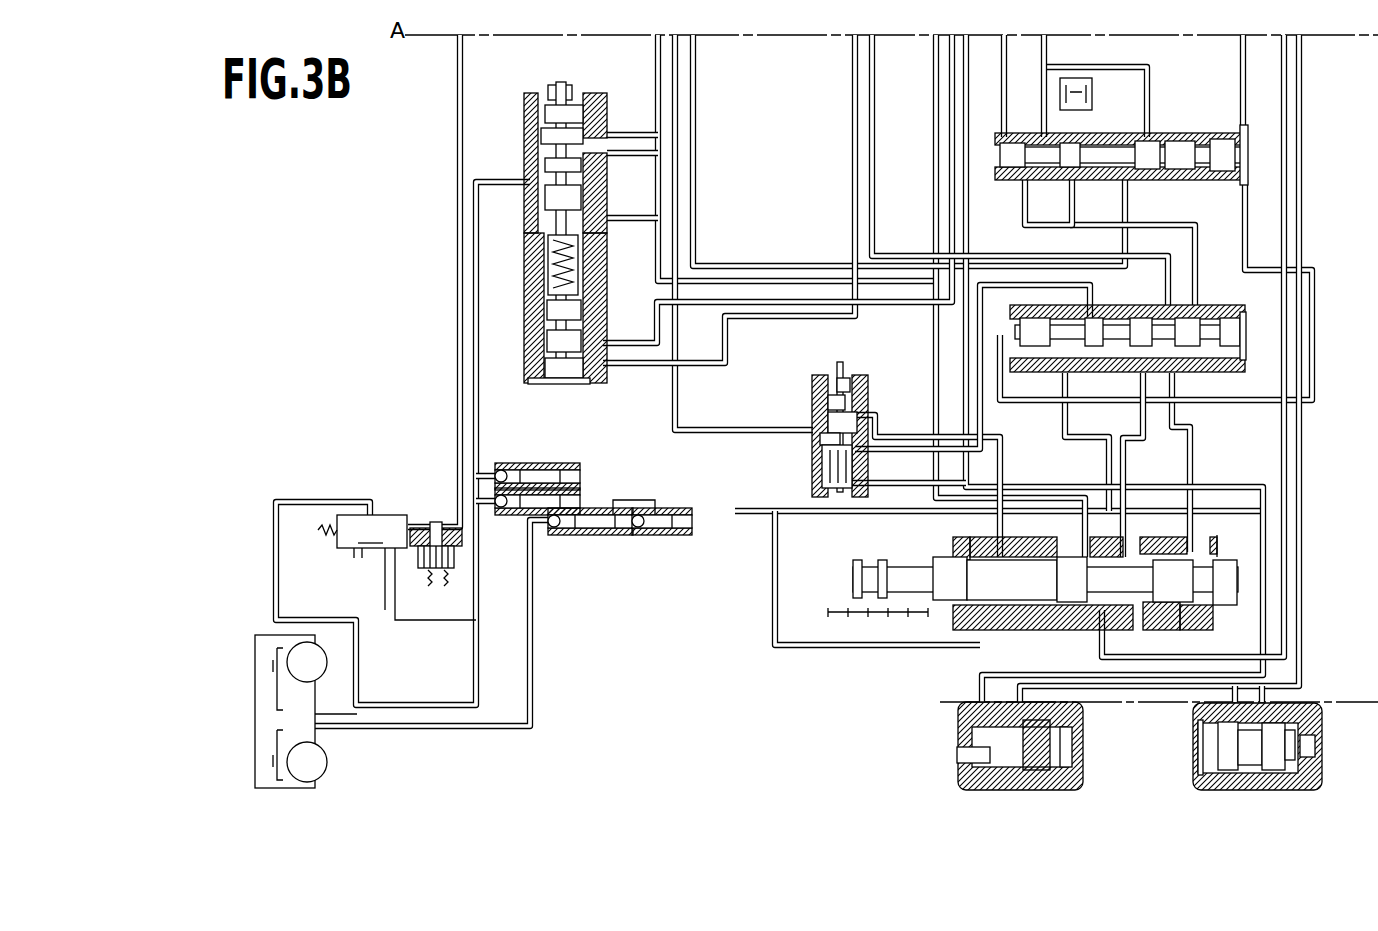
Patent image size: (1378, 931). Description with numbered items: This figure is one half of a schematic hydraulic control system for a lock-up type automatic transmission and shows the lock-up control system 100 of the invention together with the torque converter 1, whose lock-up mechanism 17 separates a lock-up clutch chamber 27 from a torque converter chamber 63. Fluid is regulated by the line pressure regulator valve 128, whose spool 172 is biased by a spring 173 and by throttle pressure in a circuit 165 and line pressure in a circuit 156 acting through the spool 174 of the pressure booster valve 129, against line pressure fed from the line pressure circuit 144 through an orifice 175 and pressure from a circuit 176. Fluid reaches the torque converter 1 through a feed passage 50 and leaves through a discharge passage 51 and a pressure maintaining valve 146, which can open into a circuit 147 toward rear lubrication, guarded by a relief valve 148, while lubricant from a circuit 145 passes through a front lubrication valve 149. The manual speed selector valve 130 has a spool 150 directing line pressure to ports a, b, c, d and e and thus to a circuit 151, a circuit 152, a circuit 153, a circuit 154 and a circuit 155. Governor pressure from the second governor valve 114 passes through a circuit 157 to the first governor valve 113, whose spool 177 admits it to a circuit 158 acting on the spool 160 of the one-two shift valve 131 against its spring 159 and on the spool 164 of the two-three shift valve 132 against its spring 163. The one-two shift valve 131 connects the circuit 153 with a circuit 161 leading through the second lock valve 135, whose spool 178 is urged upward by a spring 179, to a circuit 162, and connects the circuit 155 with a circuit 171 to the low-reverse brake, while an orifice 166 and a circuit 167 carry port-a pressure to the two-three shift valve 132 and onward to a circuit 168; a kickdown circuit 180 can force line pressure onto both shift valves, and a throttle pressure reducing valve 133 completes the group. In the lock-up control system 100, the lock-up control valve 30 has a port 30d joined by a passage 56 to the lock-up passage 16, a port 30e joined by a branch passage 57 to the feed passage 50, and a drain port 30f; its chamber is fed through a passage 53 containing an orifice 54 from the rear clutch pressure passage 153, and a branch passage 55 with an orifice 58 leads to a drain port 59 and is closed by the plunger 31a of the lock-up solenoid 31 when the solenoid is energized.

The torque converter 1 is at (335, 757).
The lock-up passage 16 is at (340, 715).
The lock-up mechanism 17 is at (252, 762).
The lock-up clutch chamber 27 is at (272, 694).
The lock-up control valve 30 is at (362, 536).
The port 30d is at (385, 488).
The port 30e is at (384, 553).
The drain port 30f is at (352, 556).
The lock-up solenoid 31 is at (445, 588).
The plunger 31a is at (456, 556).
The torque converter working hydraulic fluid feed passage 50 is at (447, 705).
The discharge passage 51 is at (445, 729).
The passage 53 is at (457, 490).
The orifice 54 is at (452, 530).
The branch passage 55 is at (390, 622).
The passage 56 is at (276, 556).
The branch passage 57 is at (447, 622).
The orifice 58 is at (432, 532).
The drain port 59 is at (462, 566).
The torque converter chamber 63 is at (290, 650).
The lock-up control system 100 is at (352, 529).
The first governor valve 113 is at (1196, 748).
The second governor valve 114 is at (1150, 786).
The line pressure regulator valve 128 is at (552, 208).
The pressure booster valve 129 is at (545, 321).
The speed selector valve 130 is at (1017, 585).
The 1-2 shift valve 131 is at (1252, 326).
The 2-3 shift valve 132 is at (1175, 128).
The throttle pressure reducing valve 133 is at (1020, 180).
The second lock valve 135 is at (835, 418).
The line pressure circuit 144 is at (663, 50).
The circuit 145 is at (495, 162).
The pressure maintaining valve 146 is at (565, 532).
The circuit 147 is at (608, 532).
The relief valve 148 is at (668, 532).
The front lubrication valve 149 is at (583, 473).
The spool 150 is at (943, 570).
The circuit 151 is at (966, 92).
The circuit 152 is at (858, 418).
The circuit 153 is at (458, 52).
The circuit 154 is at (1288, 58).
The circuit 155 is at (1148, 400).
The circuit 156 is at (1090, 67).
The circuit 157 is at (1142, 690).
The circuit 158 is at (1243, 52).
The spring 159 is at (1035, 372).
The spool 160 is at (1245, 350).
The circuit 161 is at (1085, 302).
The circuit 162 is at (679, 74).
The spring 163 is at (1072, 184).
The spool 164 is at (1228, 176).
The circuit 165 is at (855, 48).
The orifice 166 is at (1085, 100).
The circuit 167 is at (1148, 128).
The circuit 168 is at (695, 98).
The circuit 171 is at (1302, 85).
The spool 172 is at (553, 61).
The spring 173 is at (546, 285).
The spool 174 is at (536, 382).
The orifice 175 is at (645, 133).
The circuit 176 is at (655, 46).
The spool 177 is at (1200, 765).
The spool 178 is at (812, 448).
The spring 179 is at (812, 472).
The kickdown circuit 180 is at (1043, 72).